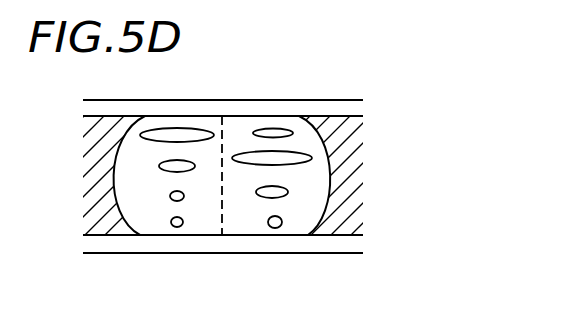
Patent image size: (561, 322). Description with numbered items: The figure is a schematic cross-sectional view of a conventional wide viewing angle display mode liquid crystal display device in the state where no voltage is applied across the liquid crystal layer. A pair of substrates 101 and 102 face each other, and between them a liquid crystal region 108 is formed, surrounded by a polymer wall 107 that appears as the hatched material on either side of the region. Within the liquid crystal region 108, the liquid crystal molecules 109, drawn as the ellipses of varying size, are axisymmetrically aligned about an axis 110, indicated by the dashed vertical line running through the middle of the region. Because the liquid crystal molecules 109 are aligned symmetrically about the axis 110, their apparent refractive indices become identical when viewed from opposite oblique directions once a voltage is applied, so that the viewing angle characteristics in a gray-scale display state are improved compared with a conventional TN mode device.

The substrate 101 is at (347, 247).
The substrate 102 is at (323, 105).
The polymer wall 107 is at (345, 130).
The liquid crystal region 108 is at (298, 210).
The liquid crystal molecules 109 is at (278, 153).
The axis 110 is at (225, 142).